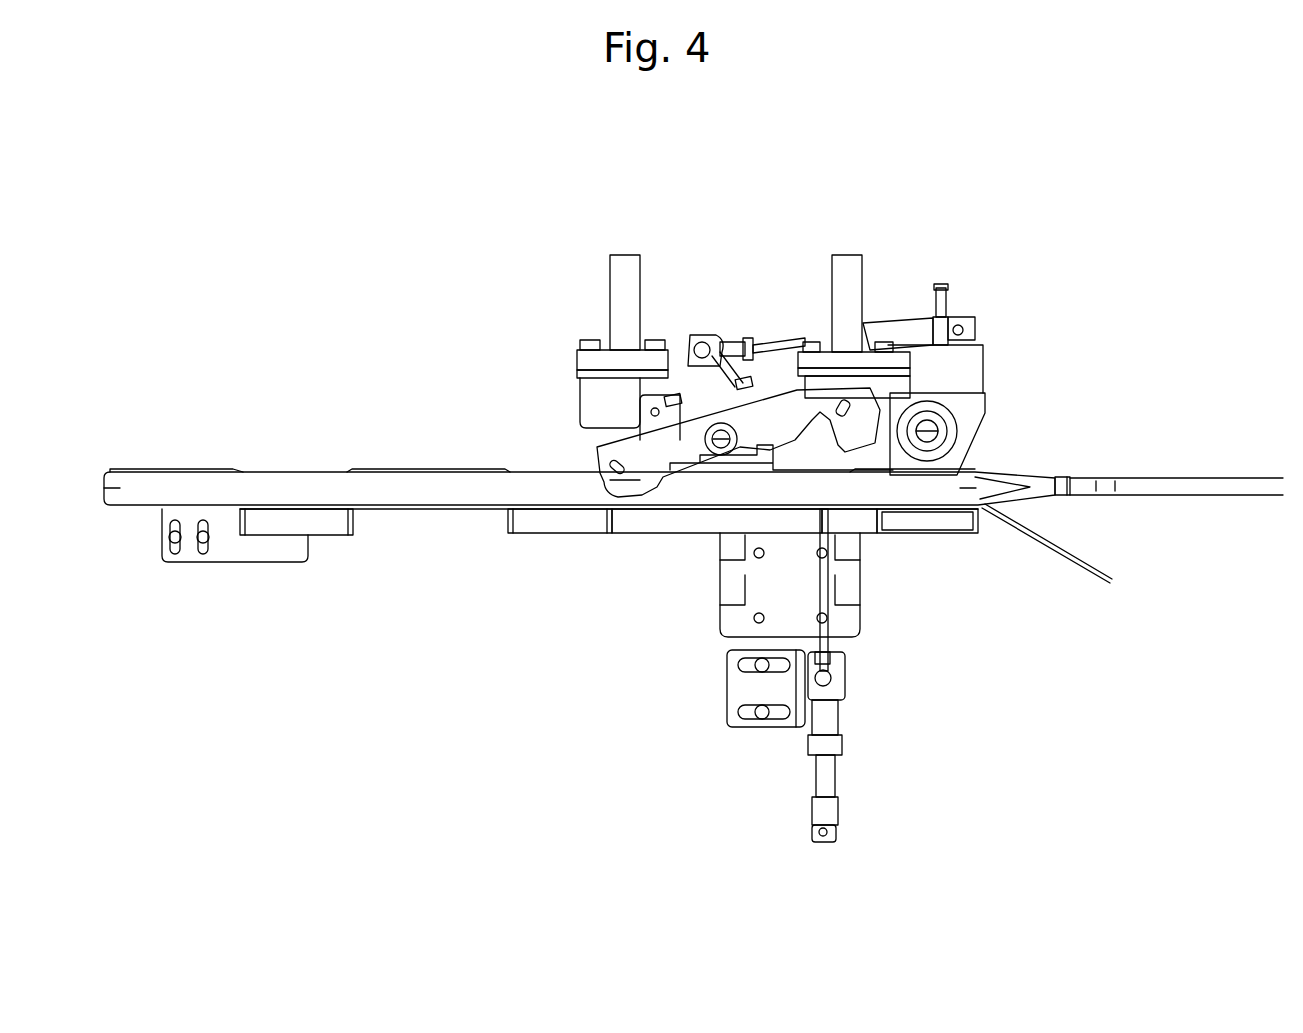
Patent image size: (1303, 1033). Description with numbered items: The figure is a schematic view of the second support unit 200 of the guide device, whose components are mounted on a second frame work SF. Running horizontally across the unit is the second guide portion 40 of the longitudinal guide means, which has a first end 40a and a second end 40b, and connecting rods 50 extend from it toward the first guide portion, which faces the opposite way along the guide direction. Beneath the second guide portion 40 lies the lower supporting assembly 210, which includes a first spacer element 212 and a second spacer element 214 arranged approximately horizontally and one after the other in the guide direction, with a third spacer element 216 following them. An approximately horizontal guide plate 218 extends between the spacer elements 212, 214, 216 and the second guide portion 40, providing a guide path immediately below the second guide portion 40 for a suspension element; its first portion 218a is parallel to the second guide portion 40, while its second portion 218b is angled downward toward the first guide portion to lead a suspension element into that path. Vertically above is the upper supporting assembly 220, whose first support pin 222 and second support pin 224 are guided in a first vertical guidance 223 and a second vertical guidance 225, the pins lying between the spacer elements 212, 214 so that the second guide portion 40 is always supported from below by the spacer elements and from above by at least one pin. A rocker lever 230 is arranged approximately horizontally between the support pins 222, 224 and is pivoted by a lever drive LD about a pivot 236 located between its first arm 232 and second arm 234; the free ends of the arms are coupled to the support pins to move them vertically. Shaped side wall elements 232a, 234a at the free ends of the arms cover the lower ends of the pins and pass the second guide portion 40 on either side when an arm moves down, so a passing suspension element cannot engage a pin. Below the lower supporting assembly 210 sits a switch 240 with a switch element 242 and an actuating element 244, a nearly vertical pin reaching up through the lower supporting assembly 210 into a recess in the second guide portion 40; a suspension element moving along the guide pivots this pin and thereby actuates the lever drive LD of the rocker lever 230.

The second support unit 200 is at (262, 313).
The second guide portion 40 is at (368, 492).
The first end 40a is at (975, 483).
The second end 40b is at (130, 481).
The connecting rods 50 is at (1132, 487).
The lower supporting assembly 210 is at (1108, 630).
The first spacer element 212 is at (915, 520).
The second spacer element 214 is at (552, 518).
The third spacer element 216 is at (318, 525).
The guide plate 218 is at (411, 638).
The first portion 218a is at (433, 510).
The second portion 218b is at (1052, 545).
The upper supporting assembly 220 is at (1176, 318).
The first support pin 222 is at (870, 345).
The first vertical guidance 223 is at (858, 293).
The second support pin 224 is at (620, 388).
The second vertical guidance 225 is at (620, 285).
The lever drive LD is at (943, 297).
The rocker lever 230 is at (914, 168).
The first arm 232 is at (817, 405).
The side wall elements 232a is at (845, 405).
The second arm 234 is at (650, 470).
The side wall elements 234a is at (630, 480).
The pivot 236 is at (722, 436).
The switch 240 is at (956, 853).
The switch element 242 is at (833, 697).
The actuating element 244 is at (825, 617).
The second frame work SF is at (765, 587).